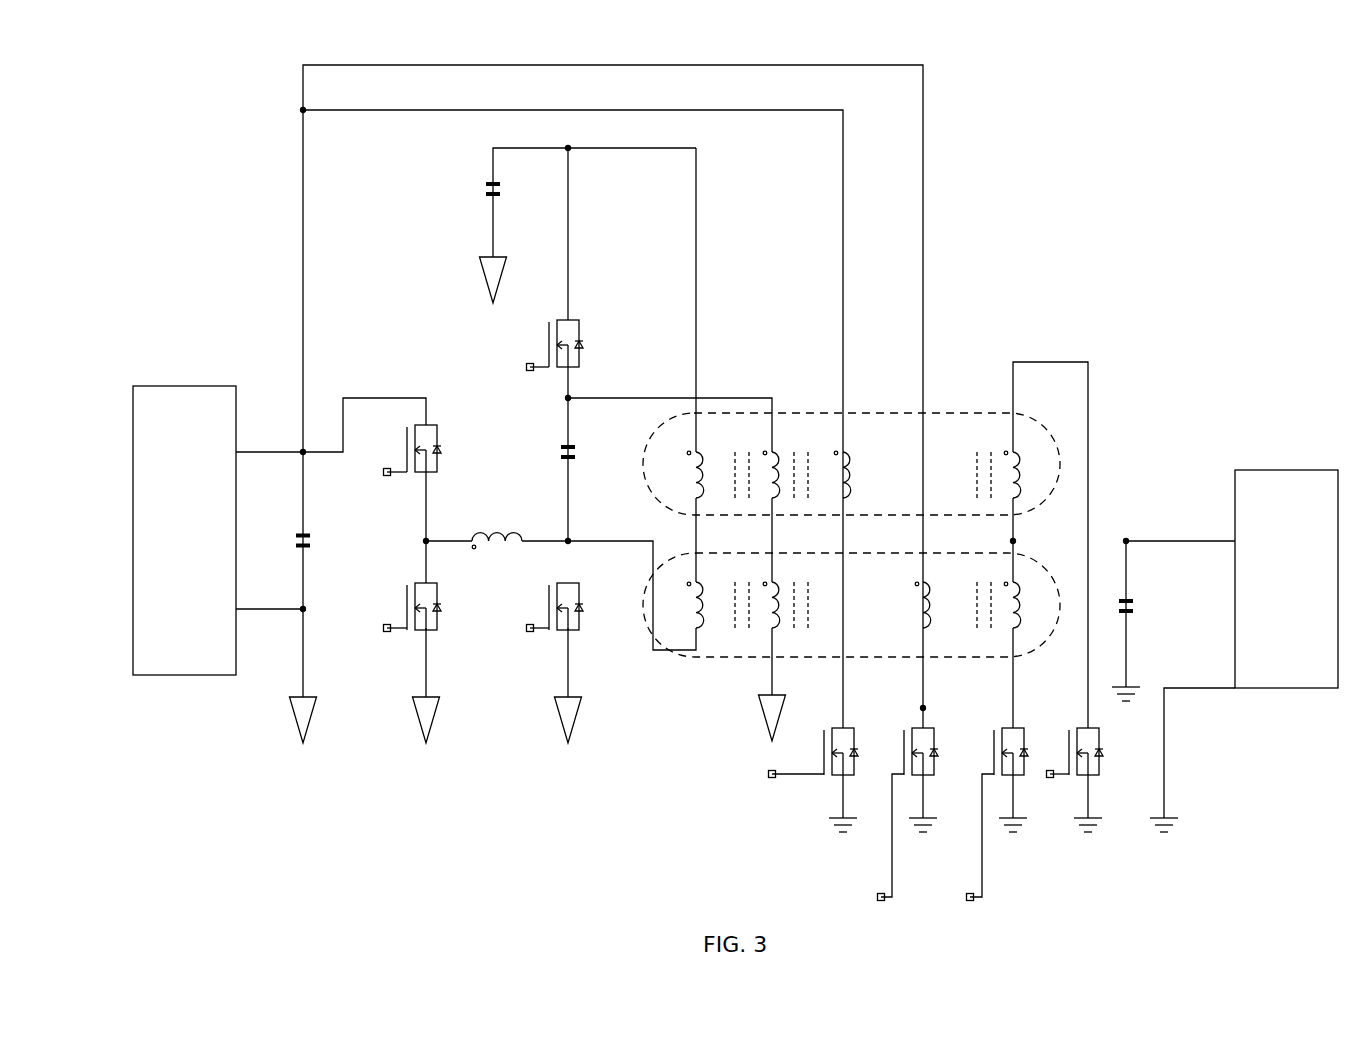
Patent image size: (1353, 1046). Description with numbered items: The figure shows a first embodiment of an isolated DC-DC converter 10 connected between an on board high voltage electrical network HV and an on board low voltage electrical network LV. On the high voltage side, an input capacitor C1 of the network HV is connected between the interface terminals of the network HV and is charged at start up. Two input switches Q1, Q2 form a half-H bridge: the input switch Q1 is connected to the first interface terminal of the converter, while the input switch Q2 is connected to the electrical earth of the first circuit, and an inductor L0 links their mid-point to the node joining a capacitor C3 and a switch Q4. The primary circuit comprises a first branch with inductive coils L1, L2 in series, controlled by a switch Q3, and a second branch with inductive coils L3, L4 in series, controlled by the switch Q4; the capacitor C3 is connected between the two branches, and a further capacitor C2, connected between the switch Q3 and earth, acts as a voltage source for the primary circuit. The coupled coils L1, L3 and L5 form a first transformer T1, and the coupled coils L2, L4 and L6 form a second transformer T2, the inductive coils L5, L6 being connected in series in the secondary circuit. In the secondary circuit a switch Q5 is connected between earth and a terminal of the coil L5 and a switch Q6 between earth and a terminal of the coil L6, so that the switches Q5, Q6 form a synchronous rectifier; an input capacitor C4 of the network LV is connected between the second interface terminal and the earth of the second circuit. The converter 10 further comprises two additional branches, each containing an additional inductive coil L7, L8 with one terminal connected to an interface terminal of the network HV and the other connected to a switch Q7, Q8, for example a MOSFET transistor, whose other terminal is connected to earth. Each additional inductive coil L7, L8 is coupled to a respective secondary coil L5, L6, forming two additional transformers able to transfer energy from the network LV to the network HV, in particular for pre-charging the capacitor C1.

The isolated DC-DC converter 10 is at (228, 170).
The on board high voltage electrical network HV is at (183, 395).
The on board low voltage electrical network LV is at (1268, 483).
The input capacitor C1 is at (312, 638).
The capacitor C2 is at (588, 225).
The capacitor C3 is at (581, 469).
The input capacitor C4 is at (1136, 620).
The input switch Q1 is at (385, 490).
The input switch Q2 is at (424, 654).
The switch Q3 is at (569, 274).
The switch Q4 is at (567, 641).
The switch Q5 is at (1010, 814).
The switch Q6 is at (1088, 780).
The switch Q7 is at (824, 774).
The switch Q8 is at (923, 814).
The inductor L0 is at (497, 552).
The inductive coil L1 is at (682, 490).
The inductive coil L2 is at (778, 652).
The inductive coil L3 is at (686, 365).
The inductive coil L4 is at (636, 595).
The inductive coil L5 is at (1046, 545).
The inductive coil L6 is at (1023, 655).
The additional inductive coil L7 is at (854, 474).
The additional inductive coil L8 is at (934, 646).
The first transformer T1 is at (966, 413).
The second transformer T2 is at (718, 657).